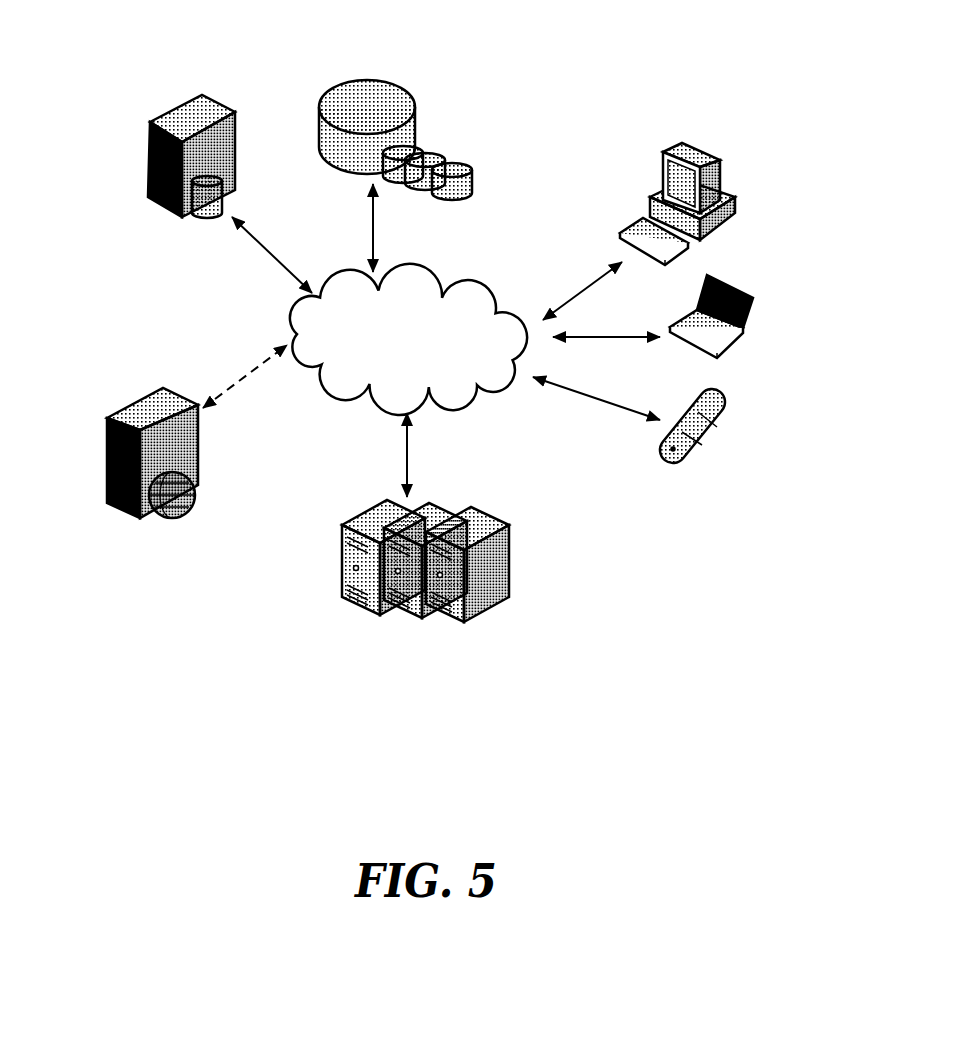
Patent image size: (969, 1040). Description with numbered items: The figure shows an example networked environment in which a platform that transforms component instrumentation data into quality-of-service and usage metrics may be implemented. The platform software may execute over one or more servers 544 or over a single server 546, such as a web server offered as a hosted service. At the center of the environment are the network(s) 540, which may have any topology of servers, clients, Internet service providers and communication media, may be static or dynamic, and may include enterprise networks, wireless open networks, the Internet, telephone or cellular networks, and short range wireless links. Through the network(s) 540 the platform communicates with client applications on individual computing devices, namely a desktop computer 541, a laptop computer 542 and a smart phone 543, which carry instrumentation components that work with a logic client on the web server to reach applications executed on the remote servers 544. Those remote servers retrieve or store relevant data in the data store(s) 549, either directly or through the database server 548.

The network(s) 540 is at (414, 260).
The desktop computer 541 is at (722, 135).
The laptop computer 542 is at (758, 271).
The smart phone 543 is at (728, 395).
The servers 544 is at (371, 500).
The single server 546 is at (127, 395).
The database server 548 is at (203, 225).
The data store(s) 549 is at (383, 55).